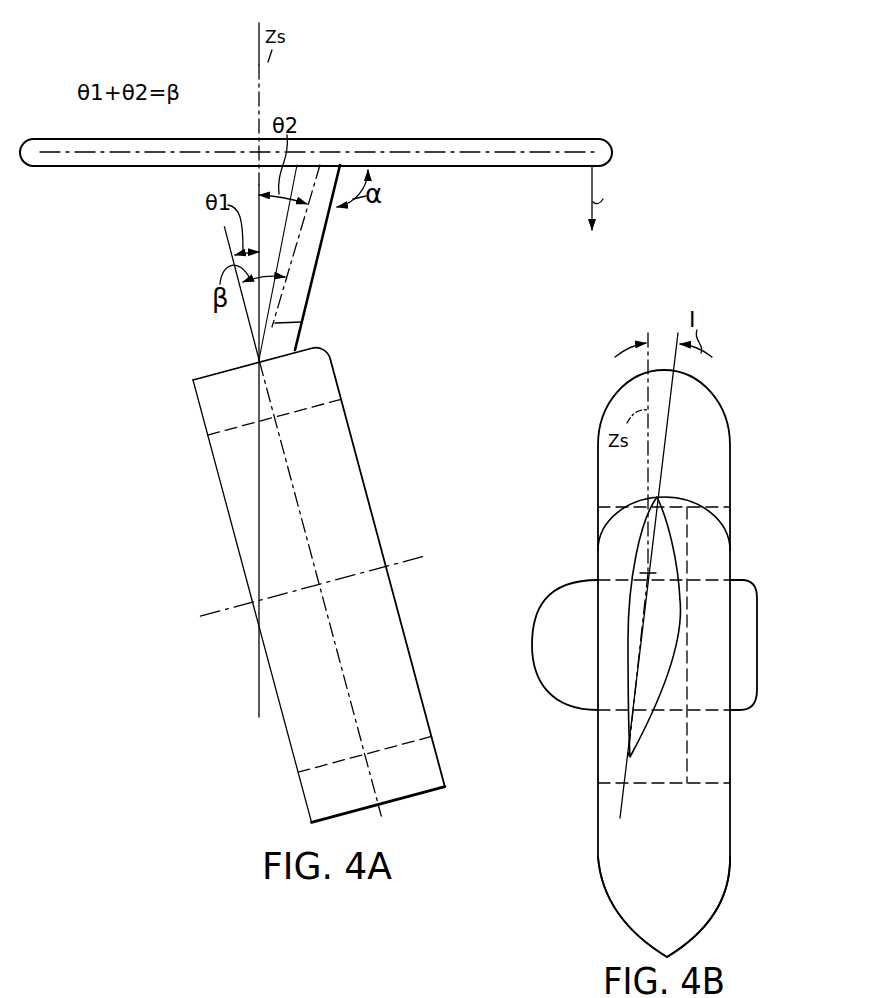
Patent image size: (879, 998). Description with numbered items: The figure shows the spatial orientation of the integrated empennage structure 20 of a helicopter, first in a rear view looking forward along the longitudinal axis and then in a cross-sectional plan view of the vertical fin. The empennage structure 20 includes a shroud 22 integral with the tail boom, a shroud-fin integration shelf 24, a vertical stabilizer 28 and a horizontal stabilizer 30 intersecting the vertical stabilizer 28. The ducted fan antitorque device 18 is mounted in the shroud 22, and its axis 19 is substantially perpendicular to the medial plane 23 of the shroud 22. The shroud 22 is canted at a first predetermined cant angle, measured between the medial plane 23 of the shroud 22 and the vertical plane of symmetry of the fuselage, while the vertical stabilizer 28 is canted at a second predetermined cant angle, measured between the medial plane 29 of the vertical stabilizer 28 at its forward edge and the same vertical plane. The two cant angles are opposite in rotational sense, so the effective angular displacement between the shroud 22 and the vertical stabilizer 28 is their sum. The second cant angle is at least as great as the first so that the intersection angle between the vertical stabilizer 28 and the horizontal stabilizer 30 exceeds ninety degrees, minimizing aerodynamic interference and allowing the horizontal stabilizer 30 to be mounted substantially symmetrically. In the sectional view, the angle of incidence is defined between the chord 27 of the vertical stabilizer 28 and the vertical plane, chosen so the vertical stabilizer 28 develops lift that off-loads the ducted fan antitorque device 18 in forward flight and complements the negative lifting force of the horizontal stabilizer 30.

In FIG. 4A, the ducted fan antitorque device 18 is at (319, 583).
In FIG. 4B, the ducted fan antitorque device 18 is at (568, 713).
In FIG. 4A, the axis of the ducted fan antitorque device 19 is at (311, 587).
In FIG. 4A, the empennage structure 20 is at (295, 523).
In FIG. 4B, the empennage structure 20 is at (677, 663).
In FIG. 4A, the shroud 22 is at (378, 805).
In FIG. 4B, the shroud 22 is at (598, 839).
In FIG. 4A, the medial plane of the shroud 23 is at (302, 521).
In FIG. 4A, the shroud-fin integration shelf 24 is at (261, 369).
In FIG. 4B, the chord of the vertical stabilizer 27 is at (645, 631).
In FIG. 4A, the vertical stabilizer 28 is at (312, 262).
In FIG. 4B, the vertical stabilizer 28 is at (698, 627).
In FIG. 4A, the medial plane of the vertical stabilizer 29 is at (303, 322).
In FIG. 4A, the horizontal stabilizer 30 is at (462, 139).